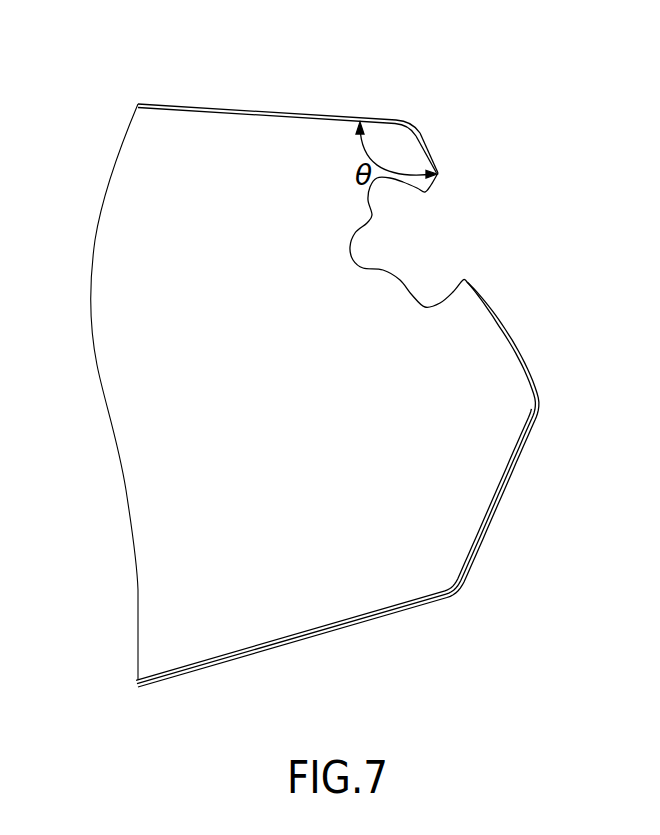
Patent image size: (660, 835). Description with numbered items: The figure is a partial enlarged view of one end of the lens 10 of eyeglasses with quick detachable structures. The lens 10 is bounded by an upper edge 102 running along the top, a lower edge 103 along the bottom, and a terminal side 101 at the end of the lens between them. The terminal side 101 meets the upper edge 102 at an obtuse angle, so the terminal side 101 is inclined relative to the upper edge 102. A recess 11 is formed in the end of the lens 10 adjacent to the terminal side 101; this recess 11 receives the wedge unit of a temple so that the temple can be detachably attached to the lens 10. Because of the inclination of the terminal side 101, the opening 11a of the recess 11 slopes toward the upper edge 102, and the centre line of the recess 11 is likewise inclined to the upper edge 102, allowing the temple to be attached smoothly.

The lens 10 is at (192, 126).
The upper edge 102 is at (247, 114).
The terminal side 101 is at (413, 131).
The lower edge 103 is at (335, 623).
The recess 11 is at (340, 256).
The opening 11a is at (465, 218).